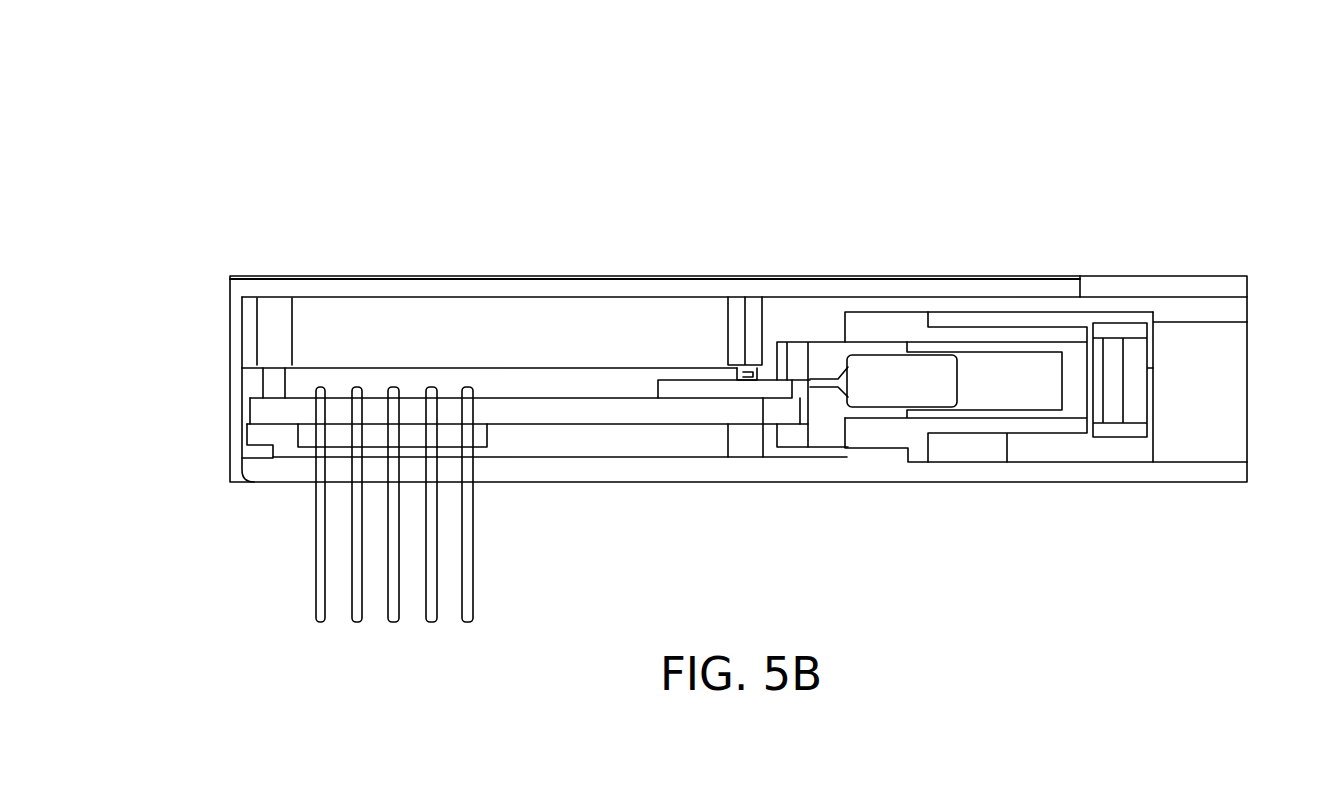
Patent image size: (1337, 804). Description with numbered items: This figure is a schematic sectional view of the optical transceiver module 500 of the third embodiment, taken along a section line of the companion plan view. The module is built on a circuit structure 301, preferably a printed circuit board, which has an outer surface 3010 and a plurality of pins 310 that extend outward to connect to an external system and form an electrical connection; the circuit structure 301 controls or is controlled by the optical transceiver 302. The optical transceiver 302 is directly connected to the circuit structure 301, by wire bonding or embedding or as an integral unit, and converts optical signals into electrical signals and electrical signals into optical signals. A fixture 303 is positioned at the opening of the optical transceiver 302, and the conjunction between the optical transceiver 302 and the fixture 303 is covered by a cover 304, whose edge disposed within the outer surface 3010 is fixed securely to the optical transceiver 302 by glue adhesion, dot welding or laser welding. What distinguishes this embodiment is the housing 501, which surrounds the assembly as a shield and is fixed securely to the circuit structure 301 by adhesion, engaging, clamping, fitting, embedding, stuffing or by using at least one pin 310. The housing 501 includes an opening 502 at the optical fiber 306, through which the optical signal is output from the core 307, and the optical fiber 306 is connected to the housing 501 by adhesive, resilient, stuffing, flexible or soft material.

The optical transceiver module 500 is at (218, 73).
The housing 501 is at (593, 482).
The opening 502 is at (1233, 392).
The circuit structure 301 is at (252, 411).
The pins 310 is at (320, 385).
The outer surface 3010 is at (550, 398).
The optical transceiver 302 is at (670, 388).
The cover 304 is at (743, 365).
The core 307 is at (787, 343).
The optical fiber 306 is at (823, 343).
The fixture 303 is at (992, 367).